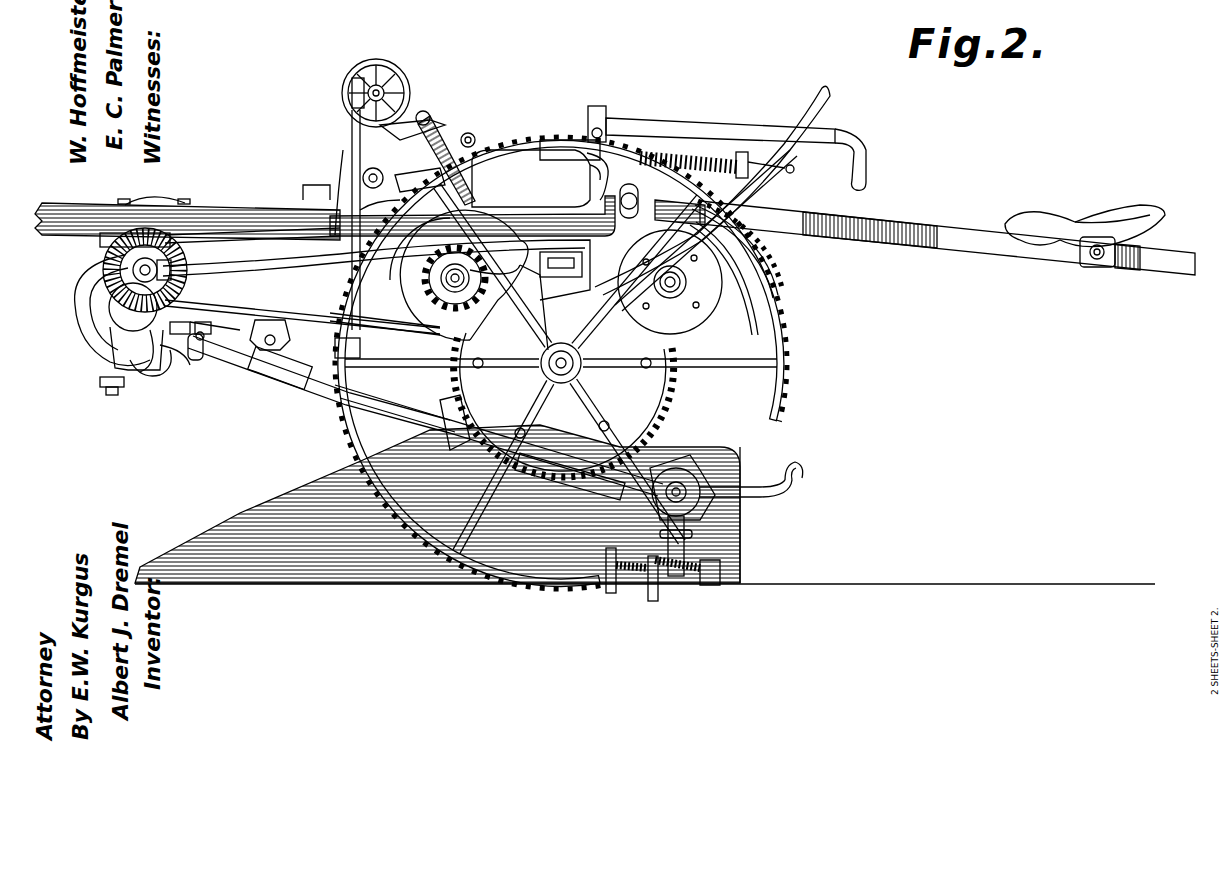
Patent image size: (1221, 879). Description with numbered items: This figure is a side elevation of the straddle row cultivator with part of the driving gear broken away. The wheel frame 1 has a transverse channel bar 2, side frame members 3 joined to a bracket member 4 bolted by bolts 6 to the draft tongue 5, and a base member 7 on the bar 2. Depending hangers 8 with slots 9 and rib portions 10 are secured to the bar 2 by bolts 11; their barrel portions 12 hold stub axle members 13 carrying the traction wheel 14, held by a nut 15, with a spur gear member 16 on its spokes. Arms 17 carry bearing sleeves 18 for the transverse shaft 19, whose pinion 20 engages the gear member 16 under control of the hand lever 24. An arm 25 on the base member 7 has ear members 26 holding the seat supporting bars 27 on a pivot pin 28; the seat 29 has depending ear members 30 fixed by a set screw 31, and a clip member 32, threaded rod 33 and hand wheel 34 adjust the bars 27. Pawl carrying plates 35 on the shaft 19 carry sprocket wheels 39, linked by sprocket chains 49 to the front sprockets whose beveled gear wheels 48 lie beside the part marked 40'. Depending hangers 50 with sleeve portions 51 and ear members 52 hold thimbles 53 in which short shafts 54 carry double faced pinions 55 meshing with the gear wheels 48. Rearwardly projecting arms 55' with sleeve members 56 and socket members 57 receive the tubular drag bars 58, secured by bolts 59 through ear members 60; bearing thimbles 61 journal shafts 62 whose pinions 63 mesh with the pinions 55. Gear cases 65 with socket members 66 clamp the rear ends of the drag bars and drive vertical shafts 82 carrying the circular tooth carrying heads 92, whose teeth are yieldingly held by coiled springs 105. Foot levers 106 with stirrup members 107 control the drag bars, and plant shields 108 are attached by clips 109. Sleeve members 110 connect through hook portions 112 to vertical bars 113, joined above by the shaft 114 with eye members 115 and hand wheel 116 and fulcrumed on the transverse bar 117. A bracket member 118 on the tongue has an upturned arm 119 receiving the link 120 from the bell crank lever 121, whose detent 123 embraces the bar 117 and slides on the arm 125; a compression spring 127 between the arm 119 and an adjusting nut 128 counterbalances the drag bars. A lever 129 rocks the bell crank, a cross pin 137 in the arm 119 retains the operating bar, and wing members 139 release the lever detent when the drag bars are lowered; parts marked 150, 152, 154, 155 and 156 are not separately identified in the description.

The wheel frame 1 is at (540, 366).
The channel bar 2 is at (600, 268).
The side frame members 3 is at (262, 274).
The bracket member 4 is at (100, 242).
The draft tongue 5 is at (208, 210).
The bolts 6 is at (154, 193).
The base member 7 is at (590, 224).
The depending hangers 8 is at (515, 272).
The slots 9 is at (532, 298).
The rib portions 10 is at (567, 316).
The bolts 11 is at (566, 278).
The barrel portions 12 is at (562, 384).
The stub axle members 13 is at (556, 366).
The traction wheels 14 is at (787, 391).
The nuts 15 is at (588, 366).
The spur gear members 16 is at (662, 391).
The arms 17 is at (505, 364).
The bearing sleeves 18 is at (680, 303).
The transverse shafts 19 is at (452, 279).
The pinions 20 is at (443, 278).
The hand levers 24 is at (770, 180).
The arm 25 is at (775, 262).
The ear members 26 is at (624, 195).
The seat supporting bars 27 is at (948, 250).
The pivot pin 28 is at (634, 190).
The seat 29 is at (1056, 222).
The depending ear members 30 is at (1082, 266).
The set screw 31 is at (1116, 266).
The clip member 32 is at (735, 215).
The threaded rod 33 is at (760, 240).
The hand wheel 34 is at (690, 178).
The pawl carrying plates 35 is at (781, 296).
The sprocket wheels 39 is at (740, 318).
The bevel gear 40' is at (125, 270).
The beveled gear wheels 48 is at (180, 292).
The sprocket chains 49 is at (270, 230).
The depending hangers 50 is at (80, 315).
The sleeve portions 51 is at (95, 283).
The ear members 52 is at (108, 333).
The thimbles 53 is at (100, 300).
The short shafts 54 is at (100, 378).
The double faced pinions 55 is at (134, 374).
The rearwardly projecting arms 55' is at (178, 372).
The sleeve members 56 is at (150, 378).
The socket members 57 is at (267, 337).
The tubular drag bars 58 is at (305, 395).
The bolts 59 is at (206, 340).
The ear members 60 is at (211, 323).
The bearing thimbles 61 is at (195, 360).
The shafts 62 is at (265, 380).
The pinions 63 is at (187, 323).
The gear cases 65 is at (690, 468).
The socket members 66 is at (640, 464).
The shafts 82 is at (738, 542).
The circular tooth carrying heads 92 is at (690, 585).
The coiled springs 105 is at (655, 600).
The foot levers 106 is at (772, 498).
The stirrup members 107 is at (806, 474).
The plant shields 108 is at (300, 490).
The clips 109 is at (437, 415).
The sleeve members 110 is at (350, 390).
The hook portions 112 is at (358, 358).
The vertically arranged bars 113 is at (352, 128).
The transversely arranged shaft 114 is at (387, 90).
The eye members 115 is at (398, 64).
The hand wheel 116 is at (400, 98).
The transversely arranged bar 117 is at (373, 168).
The bracket member 118 is at (512, 190).
The upturned arm 119 is at (590, 165).
The link 120 is at (794, 168).
The bell crank lever 121 is at (474, 136).
The detent 123 is at (410, 174).
The vertically arranged arm 125 is at (342, 156).
The compression spring 127 is at (718, 152).
The adjusting nut 128 is at (750, 164).
The lever 129 is at (430, 114).
The cross pin 137 is at (604, 124).
The wing members 139 is at (380, 197).
The link 150 is at (418, 126).
The lever 152 is at (455, 135).
The bar 154 is at (668, 126).
The hook 155 is at (867, 172).
The bracket 156 is at (560, 128).